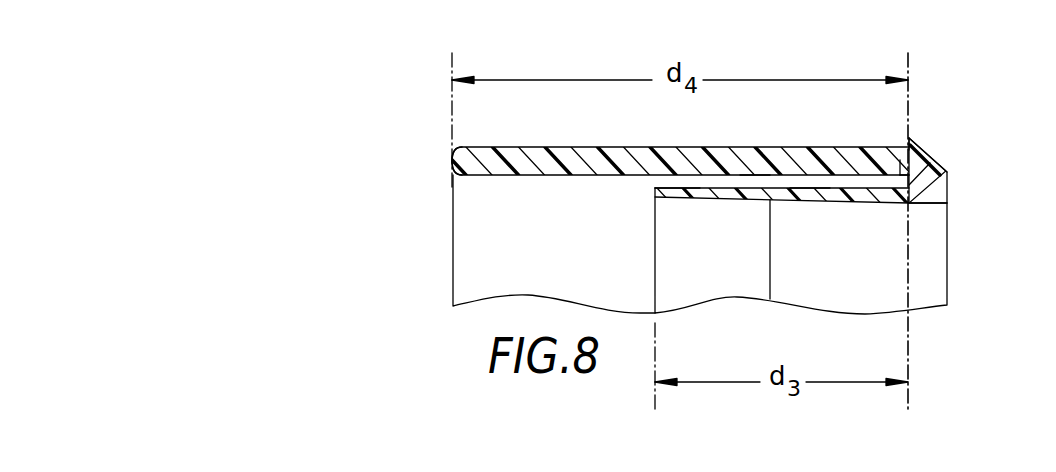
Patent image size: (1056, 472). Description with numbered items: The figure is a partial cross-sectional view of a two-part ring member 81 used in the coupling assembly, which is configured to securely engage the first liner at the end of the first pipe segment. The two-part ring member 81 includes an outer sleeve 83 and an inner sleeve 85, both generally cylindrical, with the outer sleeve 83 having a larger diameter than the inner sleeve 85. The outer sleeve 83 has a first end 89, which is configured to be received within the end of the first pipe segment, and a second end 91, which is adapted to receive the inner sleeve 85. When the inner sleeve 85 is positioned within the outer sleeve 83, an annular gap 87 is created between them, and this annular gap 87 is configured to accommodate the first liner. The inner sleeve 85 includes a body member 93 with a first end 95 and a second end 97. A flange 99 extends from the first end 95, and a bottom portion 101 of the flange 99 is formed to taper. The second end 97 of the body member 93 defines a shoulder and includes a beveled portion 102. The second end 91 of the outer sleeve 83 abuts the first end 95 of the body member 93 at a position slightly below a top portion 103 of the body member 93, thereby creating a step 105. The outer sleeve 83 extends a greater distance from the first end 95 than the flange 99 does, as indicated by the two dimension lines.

The two-part ring member 81 is at (913, 112).
The outer sleeve 83 is at (906, 205).
The inner sleeve 85 is at (575, 147).
The annular gap 87 is at (755, 177).
The first end 89 is at (453, 162).
The second end 91 is at (907, 168).
The body member 93 is at (943, 175).
The first end 95 is at (903, 190).
The second end 97 is at (946, 200).
The flange 99 is at (722, 192).
The bottom portion 101 is at (806, 200).
The beveled portion 102 is at (930, 158).
The top portion 103 is at (909, 137).
The step 105 is at (907, 158).